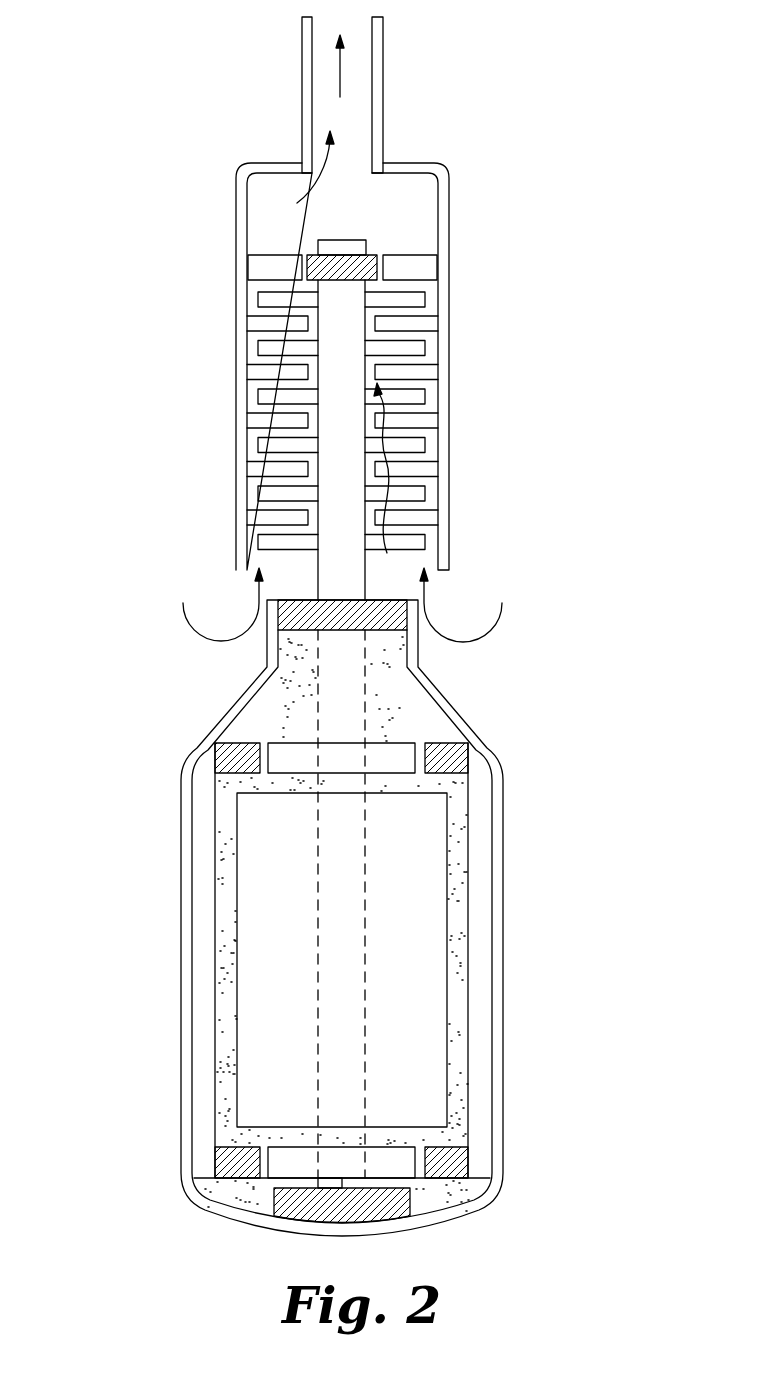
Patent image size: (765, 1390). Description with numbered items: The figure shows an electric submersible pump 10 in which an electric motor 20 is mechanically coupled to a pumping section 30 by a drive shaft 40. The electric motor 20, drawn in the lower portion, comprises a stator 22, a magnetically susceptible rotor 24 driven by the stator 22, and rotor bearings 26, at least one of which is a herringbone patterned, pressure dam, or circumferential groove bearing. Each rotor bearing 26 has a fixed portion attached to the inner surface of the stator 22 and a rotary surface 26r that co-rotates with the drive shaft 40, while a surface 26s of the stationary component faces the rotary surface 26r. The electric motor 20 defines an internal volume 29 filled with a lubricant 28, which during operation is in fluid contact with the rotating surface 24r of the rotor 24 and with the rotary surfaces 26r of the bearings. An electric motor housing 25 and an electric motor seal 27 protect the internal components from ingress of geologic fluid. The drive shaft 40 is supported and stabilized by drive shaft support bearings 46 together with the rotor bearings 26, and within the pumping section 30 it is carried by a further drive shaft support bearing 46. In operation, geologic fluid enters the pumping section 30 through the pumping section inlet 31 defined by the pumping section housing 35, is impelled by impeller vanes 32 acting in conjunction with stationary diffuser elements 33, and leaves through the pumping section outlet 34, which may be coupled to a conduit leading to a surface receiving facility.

The electric submersible pump 10 is at (114, 124).
The electric motor 20 is at (617, 640).
The stator 22 is at (480, 790).
The rotor 24 is at (410, 893).
The rotating surface of the rotor 24r is at (237, 912).
The electric motor housing 25 is at (500, 838).
The rotor bearings 26 is at (452, 750).
The rotary surface 26r is at (270, 1167).
The surface of the stationary component of rotor bearing 26s is at (258, 765).
The electric motor seal 27 is at (302, 622).
The lubricant 28 is at (457, 812).
The internal volume 29 is at (455, 960).
The pumping section 30 is at (617, 162).
The pumping section inlet 31 is at (341, 605).
The impeller vanes 32 is at (415, 300).
The stationary diffuser elements 33 is at (262, 323).
The pumping section outlet 34 is at (370, 88).
The pumping section housing 35 is at (445, 230).
The drive shaft 40 is at (360, 369).
The drive shaft support bearings 46 is at (313, 257).